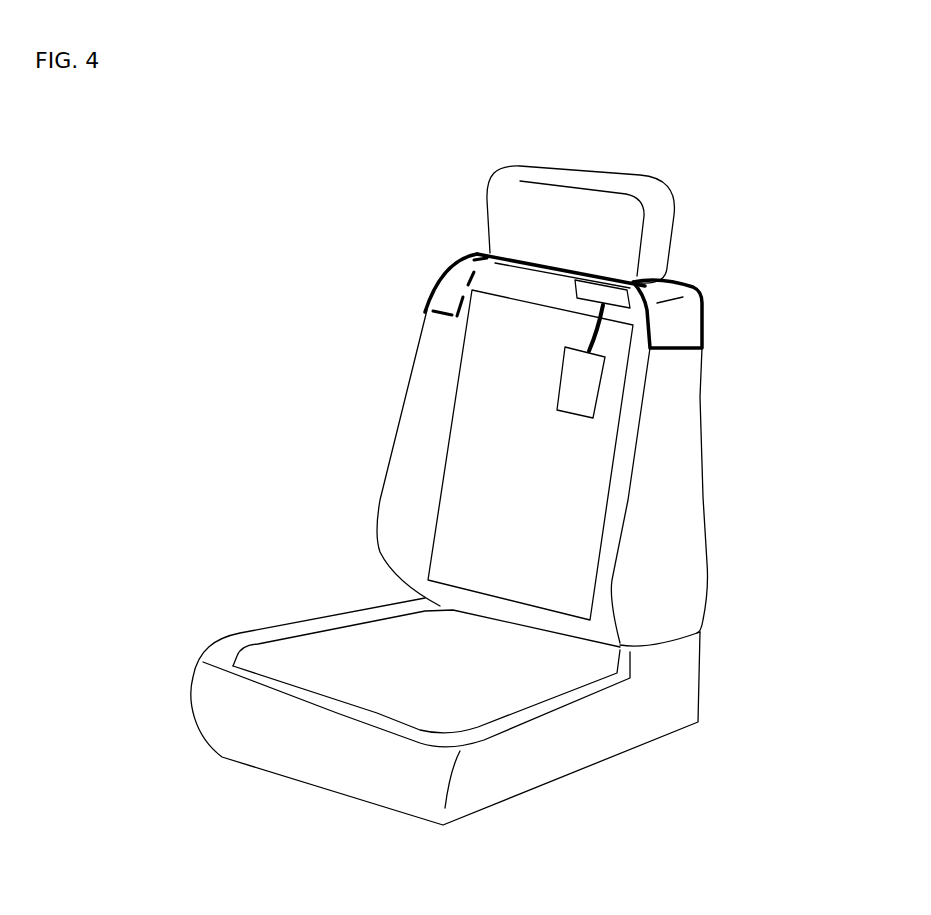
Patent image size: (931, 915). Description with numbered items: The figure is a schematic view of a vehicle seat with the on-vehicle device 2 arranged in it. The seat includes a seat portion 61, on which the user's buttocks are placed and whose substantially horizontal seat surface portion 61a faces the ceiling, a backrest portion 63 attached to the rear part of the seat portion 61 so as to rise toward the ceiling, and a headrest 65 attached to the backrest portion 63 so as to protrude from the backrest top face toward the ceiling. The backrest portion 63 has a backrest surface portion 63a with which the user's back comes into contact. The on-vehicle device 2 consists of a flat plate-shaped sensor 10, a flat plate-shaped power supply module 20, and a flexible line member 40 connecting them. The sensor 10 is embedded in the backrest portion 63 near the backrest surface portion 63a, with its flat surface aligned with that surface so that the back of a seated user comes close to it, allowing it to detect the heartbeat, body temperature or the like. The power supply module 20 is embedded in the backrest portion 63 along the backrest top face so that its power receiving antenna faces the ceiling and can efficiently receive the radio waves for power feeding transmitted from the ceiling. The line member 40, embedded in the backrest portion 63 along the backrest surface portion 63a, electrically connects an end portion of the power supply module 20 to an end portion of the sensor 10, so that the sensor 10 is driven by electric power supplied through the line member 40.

The on-vehicle device 2 is at (788, 385).
The sensor 10 is at (598, 398).
The power supply module 20 is at (632, 292).
The line member 40 is at (594, 324).
The seat portion 61 is at (192, 704).
The seat surface portion 61a is at (287, 647).
The backrest portion 63 is at (397, 466).
The backrest surface portion 63a is at (467, 413).
The headrest 65 is at (592, 202).